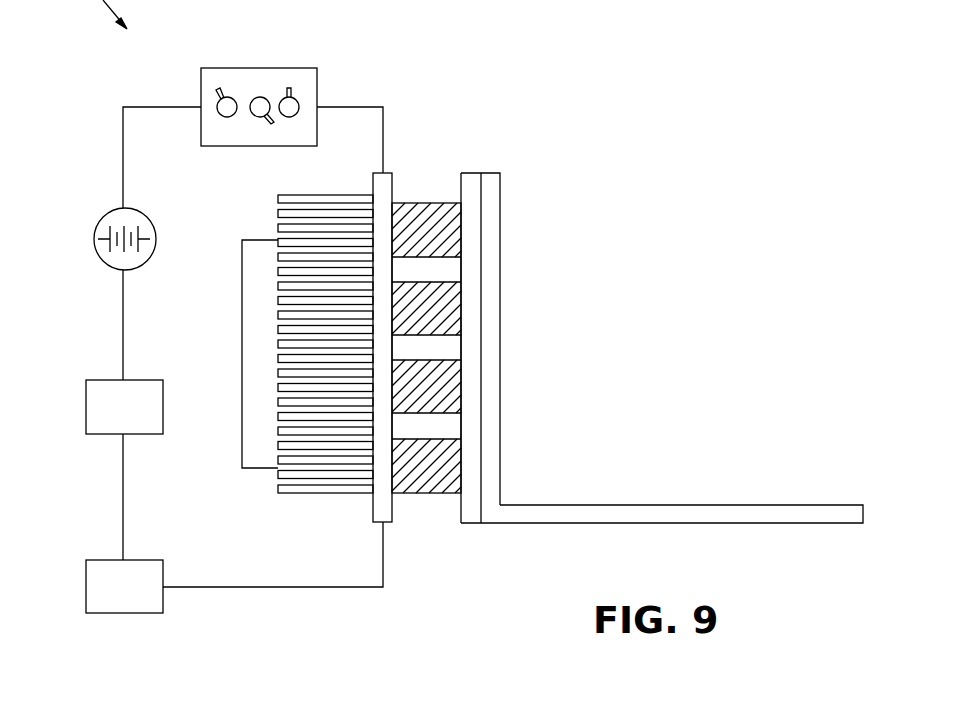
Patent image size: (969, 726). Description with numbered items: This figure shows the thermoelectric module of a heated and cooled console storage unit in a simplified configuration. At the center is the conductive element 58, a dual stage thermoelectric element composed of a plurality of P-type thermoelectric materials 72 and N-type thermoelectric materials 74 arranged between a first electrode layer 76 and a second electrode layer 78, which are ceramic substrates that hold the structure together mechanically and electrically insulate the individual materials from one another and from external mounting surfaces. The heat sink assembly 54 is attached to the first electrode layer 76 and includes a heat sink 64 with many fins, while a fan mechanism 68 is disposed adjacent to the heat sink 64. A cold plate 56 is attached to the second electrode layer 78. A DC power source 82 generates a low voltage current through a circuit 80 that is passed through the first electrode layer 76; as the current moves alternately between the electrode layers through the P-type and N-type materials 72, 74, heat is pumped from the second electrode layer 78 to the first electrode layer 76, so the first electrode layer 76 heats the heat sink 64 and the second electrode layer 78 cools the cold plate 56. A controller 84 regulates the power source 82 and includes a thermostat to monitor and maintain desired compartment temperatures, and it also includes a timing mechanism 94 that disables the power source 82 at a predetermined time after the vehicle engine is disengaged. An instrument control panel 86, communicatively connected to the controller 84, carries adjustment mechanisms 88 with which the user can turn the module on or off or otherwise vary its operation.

The heat sink assembly 54 is at (280, 496).
The cold plate 56 is at (743, 505).
The conductive element 58 is at (489, 295).
The heat sink 64 is at (334, 497).
The fan mechanism 68 is at (242, 438).
The P-type thermoelectric materials 72 is at (453, 225).
The N-type thermoelectric materials 74 is at (455, 305).
The first electrode layer 76 is at (387, 527).
The second electrode layer 78 is at (467, 525).
The circuit 80 is at (123, 140).
The DC power source 82 is at (97, 240).
The controller 84 is at (86, 585).
The instrument control panel 86 is at (250, 68).
The adjustment mechanisms 88 is at (293, 103).
The timing mechanism 94 is at (86, 405).